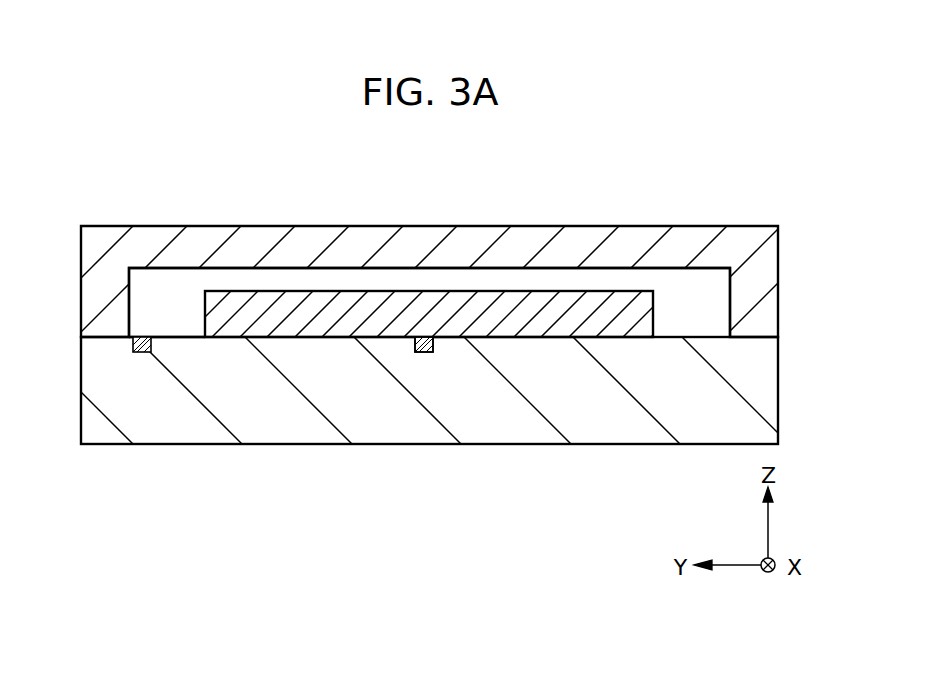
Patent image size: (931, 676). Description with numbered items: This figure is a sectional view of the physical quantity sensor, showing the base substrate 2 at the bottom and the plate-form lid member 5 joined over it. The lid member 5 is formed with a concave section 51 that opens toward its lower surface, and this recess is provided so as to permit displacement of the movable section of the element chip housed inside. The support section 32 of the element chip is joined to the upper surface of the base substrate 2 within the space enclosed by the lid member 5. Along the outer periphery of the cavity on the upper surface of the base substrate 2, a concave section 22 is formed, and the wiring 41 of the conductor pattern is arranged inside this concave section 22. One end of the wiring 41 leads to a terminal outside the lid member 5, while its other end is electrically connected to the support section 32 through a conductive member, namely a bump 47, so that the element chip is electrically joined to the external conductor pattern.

The base substrate 2 is at (621, 424).
The lid member 5 is at (524, 240).
The concave section 51 is at (178, 277).
The support section 32 is at (417, 303).
The concave section 22 is at (134, 352).
The wiring 41 is at (148, 353).
The conductive member (bump) 47 is at (435, 344).